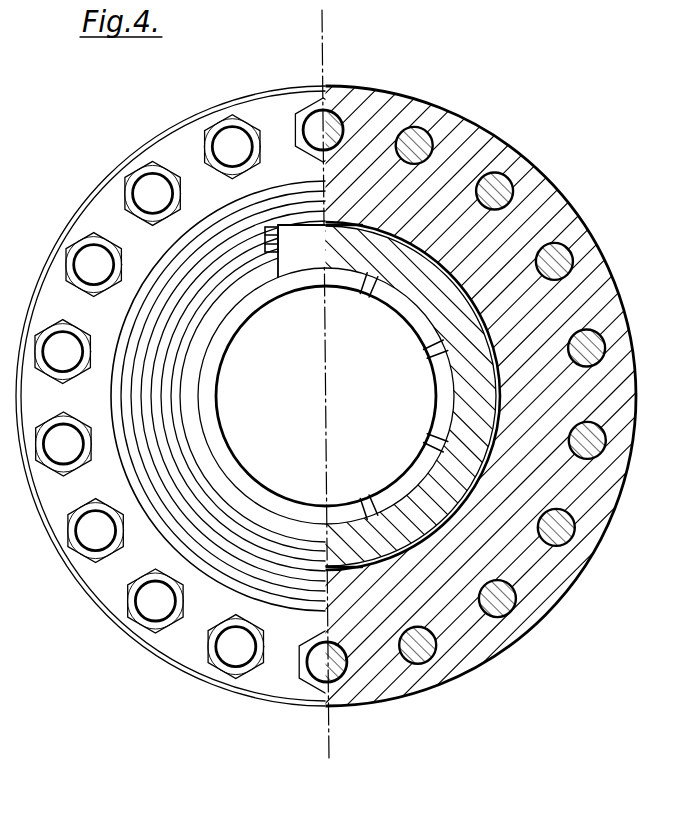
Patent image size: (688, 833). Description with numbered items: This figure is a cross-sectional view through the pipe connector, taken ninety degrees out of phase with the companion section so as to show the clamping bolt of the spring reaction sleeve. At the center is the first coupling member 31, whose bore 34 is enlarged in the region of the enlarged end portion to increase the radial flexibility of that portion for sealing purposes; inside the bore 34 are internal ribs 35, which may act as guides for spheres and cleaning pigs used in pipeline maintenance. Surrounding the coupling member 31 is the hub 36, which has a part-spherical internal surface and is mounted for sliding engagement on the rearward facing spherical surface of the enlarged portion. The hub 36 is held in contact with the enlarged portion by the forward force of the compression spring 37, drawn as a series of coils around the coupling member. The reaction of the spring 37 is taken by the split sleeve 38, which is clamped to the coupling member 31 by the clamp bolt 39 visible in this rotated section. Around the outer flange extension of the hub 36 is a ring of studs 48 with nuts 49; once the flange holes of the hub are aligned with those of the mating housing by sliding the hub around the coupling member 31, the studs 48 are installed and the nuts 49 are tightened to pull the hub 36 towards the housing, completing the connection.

The first coupling member 31 is at (430, 305).
The bore 34 is at (404, 481).
The internal ribs 35 is at (427, 357).
The hub 36 is at (548, 593).
The compression spring 37 is at (215, 218).
The split sleeve 38 is at (227, 305).
The clamp bolt 39 is at (283, 250).
The studs 48 is at (497, 608).
The nuts 49 is at (233, 676).